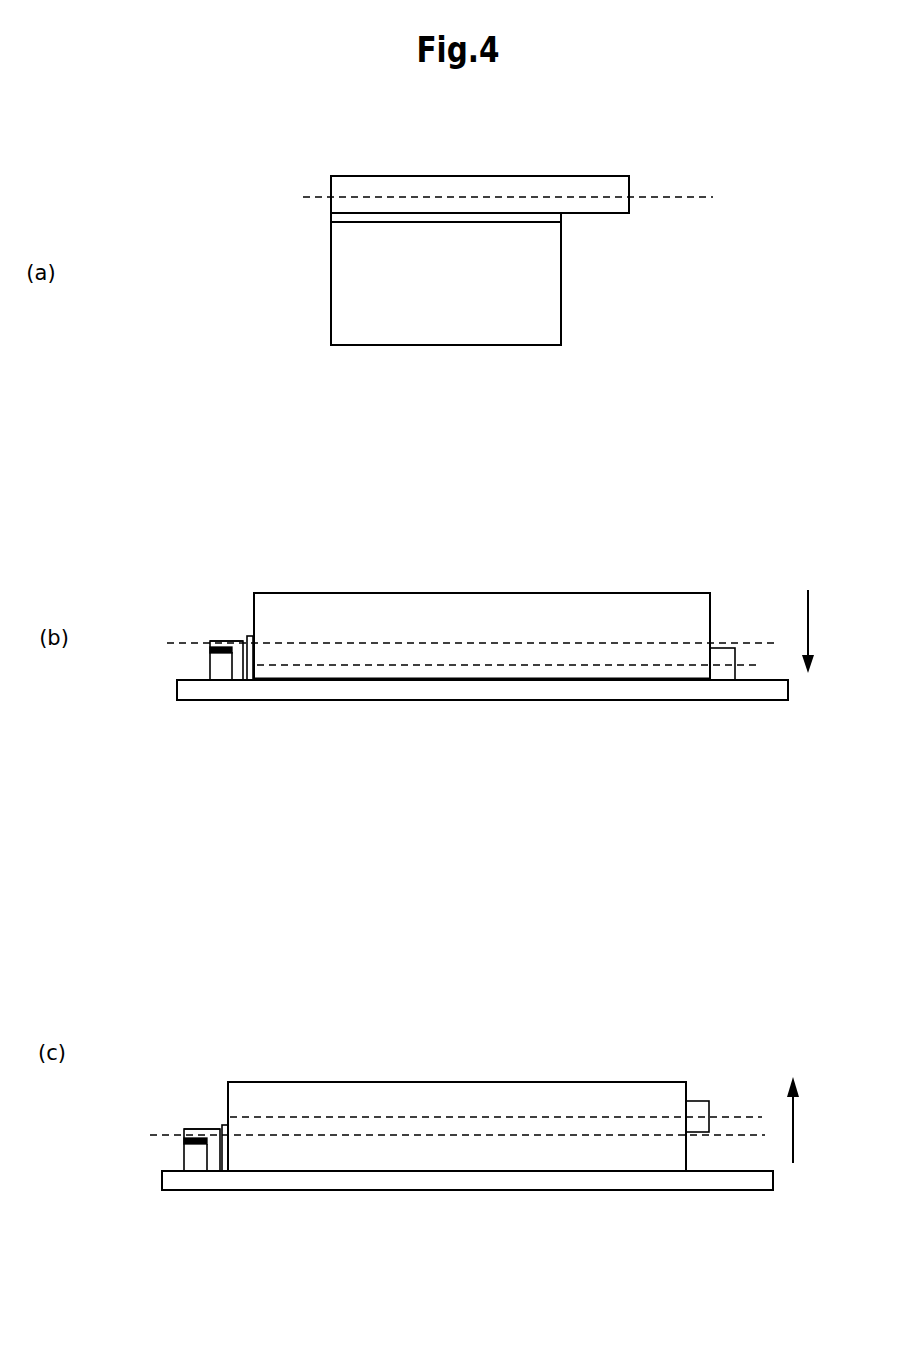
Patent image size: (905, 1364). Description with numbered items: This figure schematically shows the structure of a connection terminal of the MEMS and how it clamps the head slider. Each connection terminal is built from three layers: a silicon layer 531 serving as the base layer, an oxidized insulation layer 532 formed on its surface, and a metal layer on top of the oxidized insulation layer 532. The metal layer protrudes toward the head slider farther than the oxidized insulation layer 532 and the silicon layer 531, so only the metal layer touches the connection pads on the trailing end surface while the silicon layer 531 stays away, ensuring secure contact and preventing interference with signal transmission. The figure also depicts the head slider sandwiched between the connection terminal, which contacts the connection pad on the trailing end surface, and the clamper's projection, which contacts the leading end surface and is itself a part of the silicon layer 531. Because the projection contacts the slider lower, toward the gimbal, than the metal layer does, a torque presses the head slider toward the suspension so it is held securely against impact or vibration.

The silicon layer 531 is at (561, 297).
The oxidized insulation layer 532 is at (561, 215).